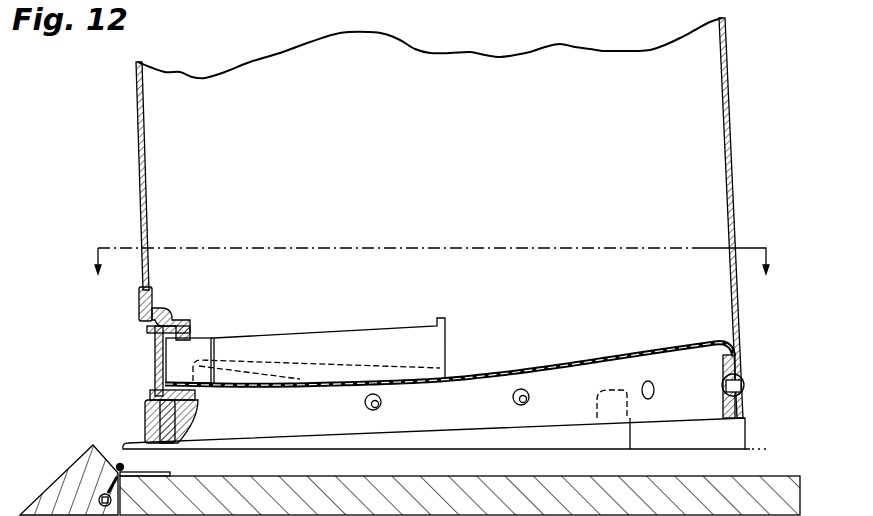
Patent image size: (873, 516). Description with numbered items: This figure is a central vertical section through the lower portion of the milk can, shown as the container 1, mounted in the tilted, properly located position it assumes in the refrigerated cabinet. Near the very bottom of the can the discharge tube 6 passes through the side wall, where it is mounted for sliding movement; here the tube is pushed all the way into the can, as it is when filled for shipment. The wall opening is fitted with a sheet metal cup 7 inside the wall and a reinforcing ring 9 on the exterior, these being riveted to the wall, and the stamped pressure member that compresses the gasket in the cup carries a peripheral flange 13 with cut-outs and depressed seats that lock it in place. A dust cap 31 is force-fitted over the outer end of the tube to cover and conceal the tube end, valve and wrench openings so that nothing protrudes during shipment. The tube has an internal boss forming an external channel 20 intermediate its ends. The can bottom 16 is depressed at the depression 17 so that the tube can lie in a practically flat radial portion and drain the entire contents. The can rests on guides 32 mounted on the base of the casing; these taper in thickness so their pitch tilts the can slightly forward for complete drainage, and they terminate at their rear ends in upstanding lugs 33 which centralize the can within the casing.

The container 1 is at (138, 134).
The discharge tube 6 is at (305, 350).
The sheet metal cup 7 is at (185, 326).
The reinforcing ring 9 is at (140, 303).
The peripheral flange 13 is at (430, 276).
The can bottom 16 is at (576, 362).
The depression in can bottom 17 is at (280, 392).
The external channel 20 is at (216, 338).
The dust cap 31 is at (155, 345).
The guides 32 is at (476, 436).
The upstanding lugs 33 is at (629, 388).